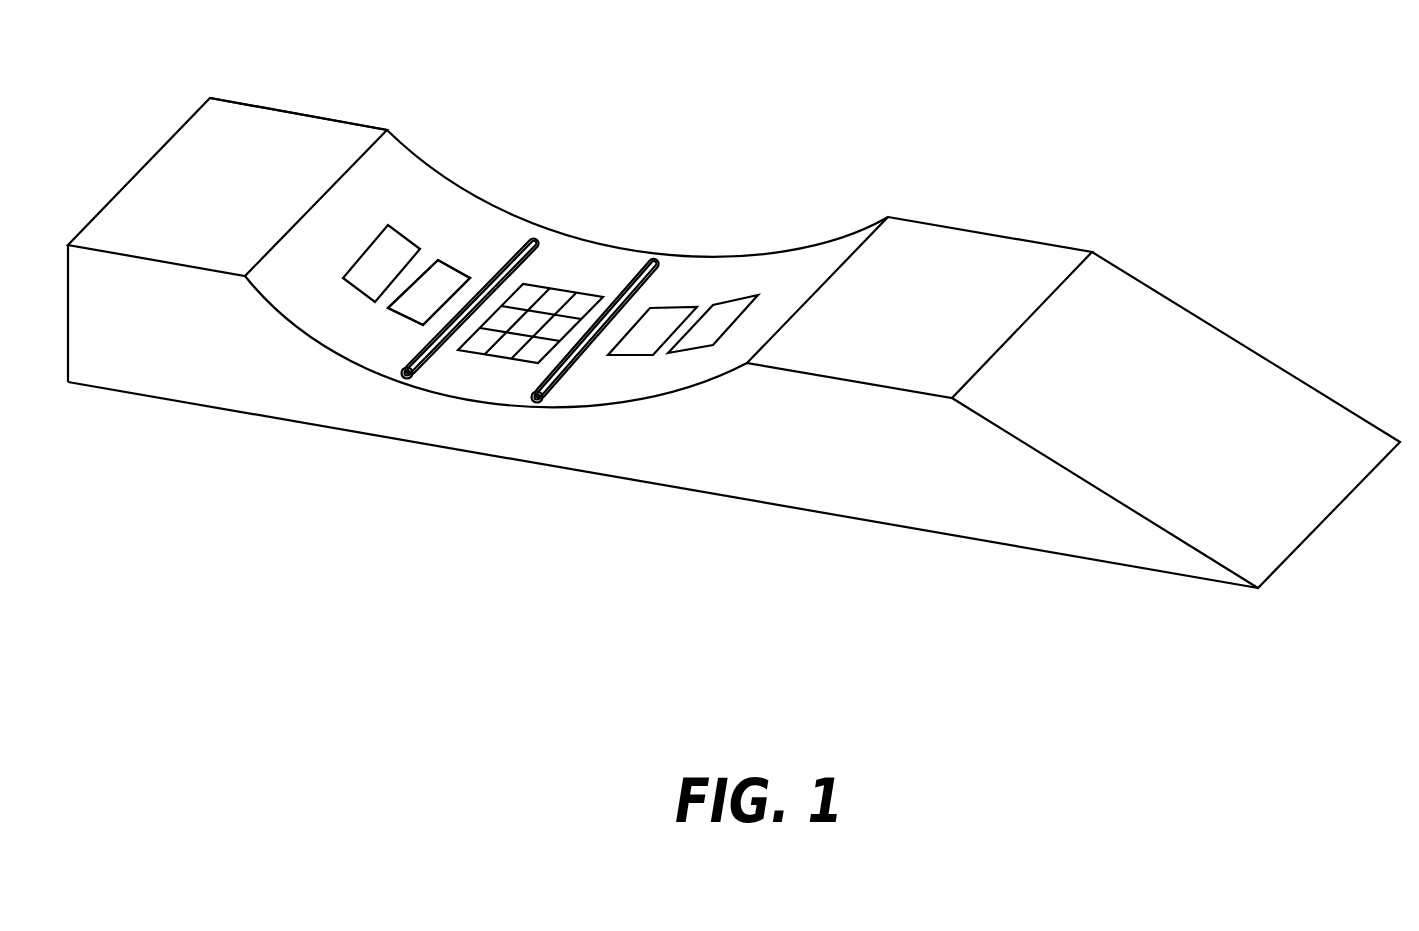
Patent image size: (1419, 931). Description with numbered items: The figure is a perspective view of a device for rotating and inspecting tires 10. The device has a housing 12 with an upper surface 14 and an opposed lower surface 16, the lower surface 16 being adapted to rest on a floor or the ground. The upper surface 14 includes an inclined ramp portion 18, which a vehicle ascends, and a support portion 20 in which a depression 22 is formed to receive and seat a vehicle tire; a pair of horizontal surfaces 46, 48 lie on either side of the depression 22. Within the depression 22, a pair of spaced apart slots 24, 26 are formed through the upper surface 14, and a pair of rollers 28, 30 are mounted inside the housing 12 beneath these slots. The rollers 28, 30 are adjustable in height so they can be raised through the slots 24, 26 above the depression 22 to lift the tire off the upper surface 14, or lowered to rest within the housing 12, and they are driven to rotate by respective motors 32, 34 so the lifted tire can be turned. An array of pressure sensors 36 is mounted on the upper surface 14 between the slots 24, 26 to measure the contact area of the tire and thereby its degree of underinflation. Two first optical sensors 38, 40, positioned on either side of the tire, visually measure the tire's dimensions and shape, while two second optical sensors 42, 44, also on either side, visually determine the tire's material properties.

The device for rotating and inspecting tires 10 is at (992, 146).
The housing 12 is at (93, 320).
The upper surface 14 is at (303, 130).
The lower surface 16 is at (203, 418).
The inclined ramp portion 18 is at (1236, 314).
The support portion 20 is at (693, 205).
The depression 22 is at (440, 200).
The first slot 24 is at (396, 342).
The second slot 26 is at (605, 380).
The first roller 28 is at (532, 249).
The second roller 30 is at (663, 270).
The first motor 32 is at (418, 372).
The second motor 34 is at (550, 393).
The pressure sensor 36 is at (505, 353).
The first optical sensor 38 is at (445, 273).
The first optical sensor 40 is at (676, 311).
The second optical sensor 42 is at (393, 245).
The second optical sensor 44 is at (737, 303).
The horizontal surface 46 is at (168, 178).
The horizontal surface 48 is at (998, 262).